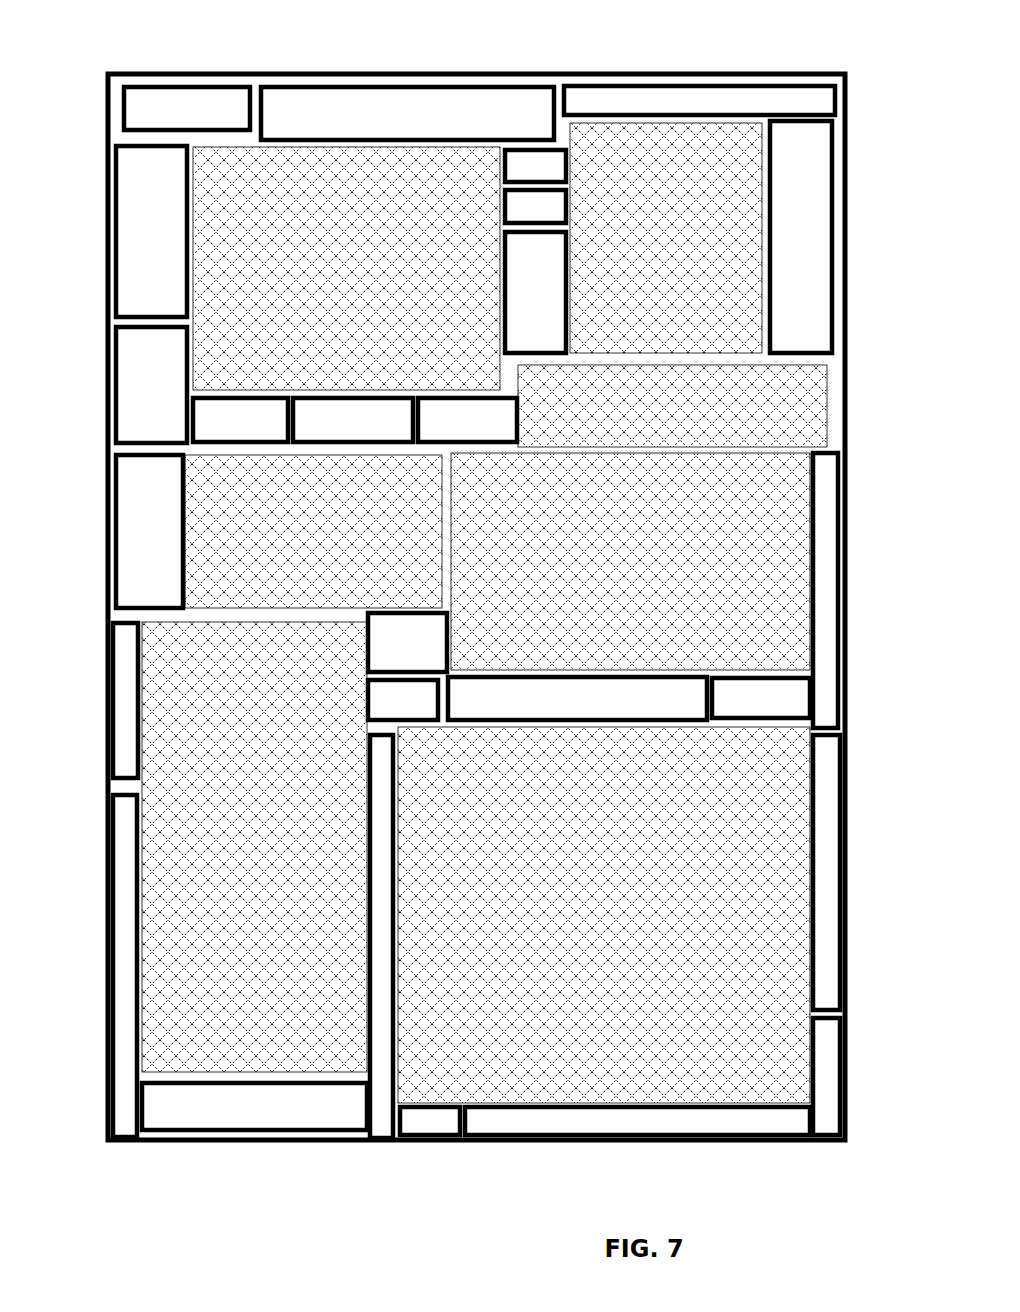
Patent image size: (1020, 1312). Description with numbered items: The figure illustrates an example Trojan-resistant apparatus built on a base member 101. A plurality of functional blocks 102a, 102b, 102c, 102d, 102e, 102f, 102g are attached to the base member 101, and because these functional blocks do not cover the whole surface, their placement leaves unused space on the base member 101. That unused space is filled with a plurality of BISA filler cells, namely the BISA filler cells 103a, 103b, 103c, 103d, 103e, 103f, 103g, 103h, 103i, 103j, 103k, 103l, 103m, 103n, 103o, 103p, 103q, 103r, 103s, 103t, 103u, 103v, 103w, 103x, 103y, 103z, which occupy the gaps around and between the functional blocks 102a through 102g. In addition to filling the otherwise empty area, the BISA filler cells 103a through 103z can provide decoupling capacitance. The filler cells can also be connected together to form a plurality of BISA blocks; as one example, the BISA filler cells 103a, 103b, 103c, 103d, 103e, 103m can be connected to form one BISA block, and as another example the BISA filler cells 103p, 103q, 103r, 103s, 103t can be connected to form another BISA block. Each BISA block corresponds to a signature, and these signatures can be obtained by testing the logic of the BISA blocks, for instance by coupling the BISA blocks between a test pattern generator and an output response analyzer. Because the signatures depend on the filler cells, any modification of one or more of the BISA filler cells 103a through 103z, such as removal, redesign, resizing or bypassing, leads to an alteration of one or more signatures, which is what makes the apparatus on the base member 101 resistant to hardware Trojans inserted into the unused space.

The base member 101 is at (382, 72).
The functional block 102a is at (346, 268).
The functional block 102b is at (666, 238).
The functional block 102c is at (313, 531).
The functional block 102d is at (672, 406).
The functional block 102e is at (630, 561).
The functional block 102f is at (254, 847).
The functional block 102g is at (604, 915).
The BISA filler cell 103a is at (187, 108).
The BISA filler cell 103b is at (407, 113).
The BISA filler cell 103c is at (151, 231).
The BISA filler cell 103d is at (151, 385).
The BISA filler cell 103e is at (699, 100).
The BISA filler cell 103f is at (240, 420).
The BISA filler cell 103g is at (353, 420).
The BISA filler cell 103h is at (467, 420).
The BISA filler cell 103i is at (535, 166).
The BISA filler cell 103j is at (535, 206).
The BISA filler cell 103k is at (535, 292).
The BISA filler cell 103l is at (801, 237).
The BISA filler cell 103m is at (149, 531).
The BISA filler cell 103n is at (113, 713).
The BISA filler cell 103o is at (113, 958).
The BISA filler cell 103p is at (407, 642).
The BISA filler cell 103q is at (403, 700).
The BISA filler cell 103r is at (577, 698).
The BISA filler cell 103s is at (761, 698).
The BISA filler cell 103t is at (838, 660).
The BISA filler cell 103u is at (840, 940).
The BISA filler cell 103v is at (840, 1080).
The BISA filler cell 103w is at (254, 1106).
The BISA filler cell 103x is at (430, 1121).
The BISA filler cell 103y is at (382, 1143).
The BISA filler cell 103z is at (637, 1121).